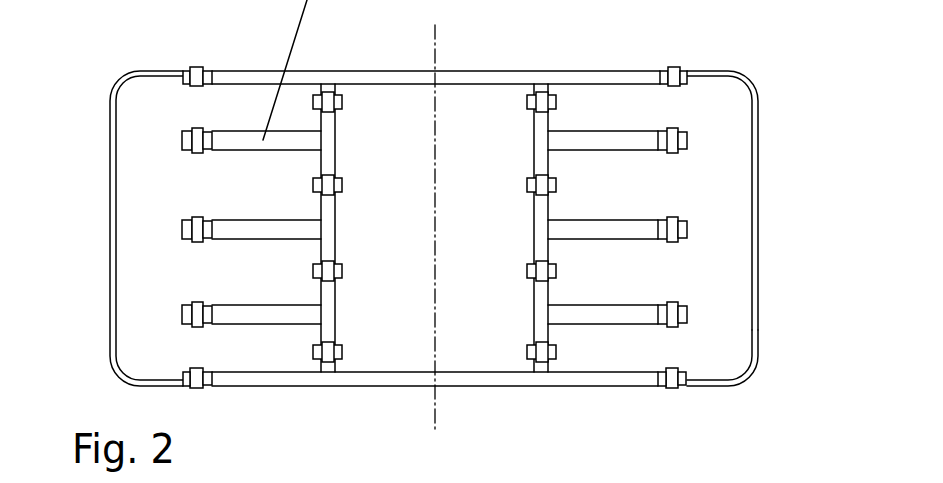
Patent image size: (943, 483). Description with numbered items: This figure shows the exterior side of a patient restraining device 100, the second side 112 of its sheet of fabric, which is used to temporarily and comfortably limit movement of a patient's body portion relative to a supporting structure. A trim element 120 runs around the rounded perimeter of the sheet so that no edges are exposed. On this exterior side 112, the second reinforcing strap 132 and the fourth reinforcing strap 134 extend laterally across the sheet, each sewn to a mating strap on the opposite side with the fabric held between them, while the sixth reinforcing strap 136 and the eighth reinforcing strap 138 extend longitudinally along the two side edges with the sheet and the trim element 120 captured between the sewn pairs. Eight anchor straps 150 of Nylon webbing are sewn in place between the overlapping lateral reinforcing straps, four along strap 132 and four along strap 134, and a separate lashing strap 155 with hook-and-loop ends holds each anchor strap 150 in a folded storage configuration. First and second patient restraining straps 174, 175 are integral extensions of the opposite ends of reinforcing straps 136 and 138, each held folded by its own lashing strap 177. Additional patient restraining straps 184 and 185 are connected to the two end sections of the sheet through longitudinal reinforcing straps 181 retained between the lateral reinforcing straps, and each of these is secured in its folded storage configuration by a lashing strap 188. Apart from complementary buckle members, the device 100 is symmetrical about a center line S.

The patient restraining device 100 is at (72, 207).
The second side 112 is at (725, 175).
The trim element 120 is at (745, 368).
The second reinforcing strap 132 is at (337, 84).
The fourth reinforcing strap 134 is at (542, 90).
The sixth reinforcing strap 136 is at (248, 77).
The eighth reinforcing strap 138 is at (395, 378).
The anchor strap 150 is at (532, 355).
The lashing strap 155 is at (542, 357).
The first patient restraining strap 174 is at (203, 388).
The second patient restraining strap 175 is at (682, 382).
The lashing strap 177 is at (193, 373).
The reinforcing strap 181 is at (635, 142).
The patient restraining strap 184 is at (185, 138).
The patient restraining strap 185 is at (682, 140).
The lashing strap 188 is at (188, 133).
The center line S is at (437, 50).